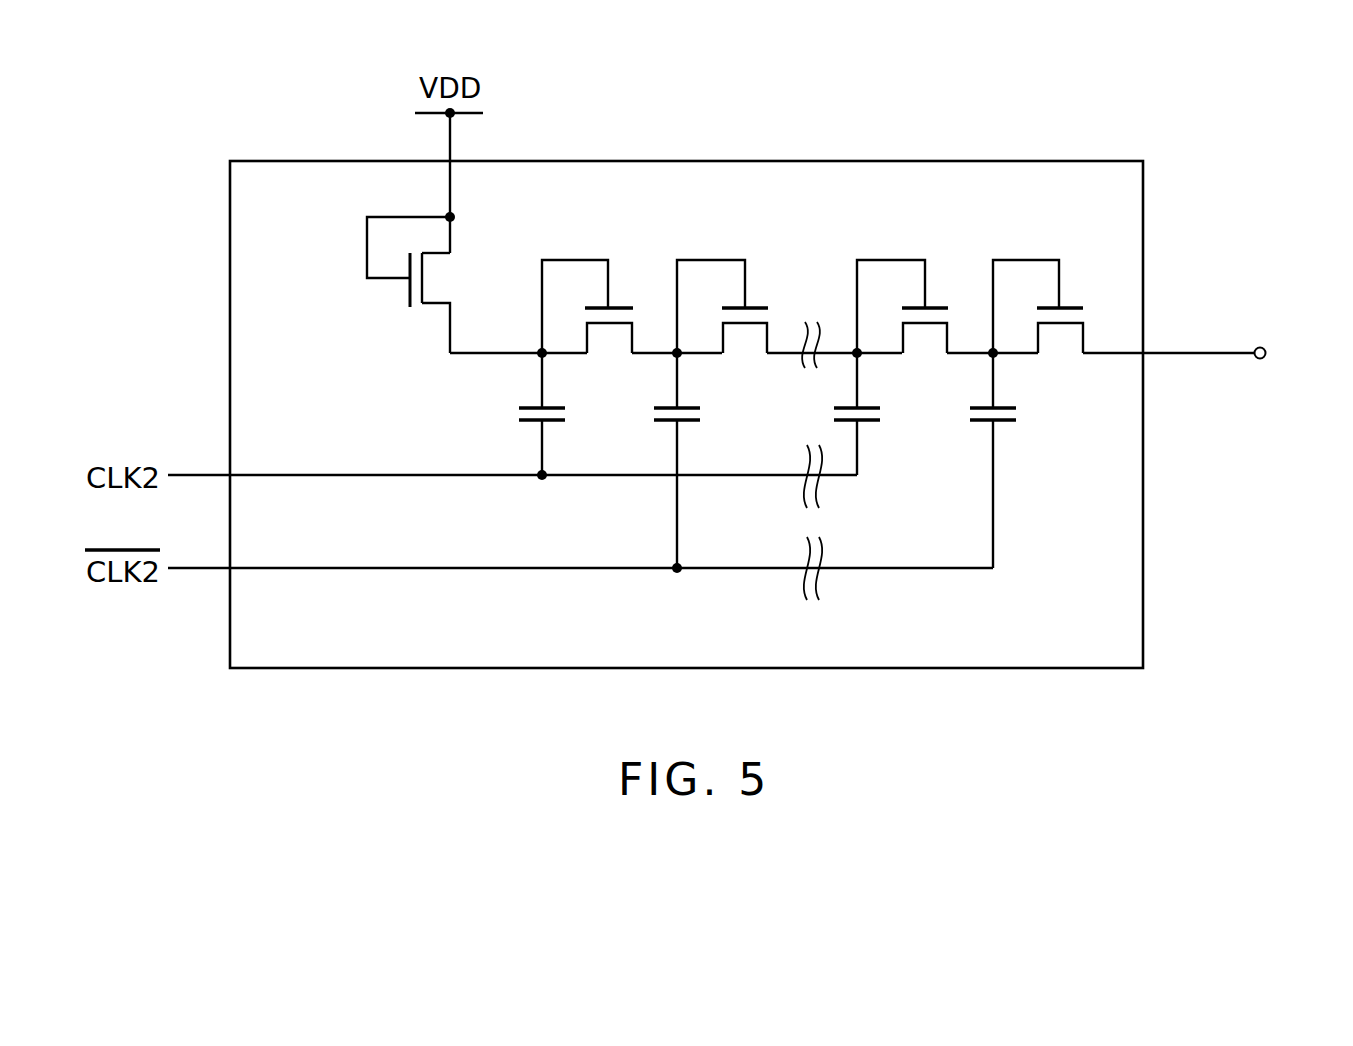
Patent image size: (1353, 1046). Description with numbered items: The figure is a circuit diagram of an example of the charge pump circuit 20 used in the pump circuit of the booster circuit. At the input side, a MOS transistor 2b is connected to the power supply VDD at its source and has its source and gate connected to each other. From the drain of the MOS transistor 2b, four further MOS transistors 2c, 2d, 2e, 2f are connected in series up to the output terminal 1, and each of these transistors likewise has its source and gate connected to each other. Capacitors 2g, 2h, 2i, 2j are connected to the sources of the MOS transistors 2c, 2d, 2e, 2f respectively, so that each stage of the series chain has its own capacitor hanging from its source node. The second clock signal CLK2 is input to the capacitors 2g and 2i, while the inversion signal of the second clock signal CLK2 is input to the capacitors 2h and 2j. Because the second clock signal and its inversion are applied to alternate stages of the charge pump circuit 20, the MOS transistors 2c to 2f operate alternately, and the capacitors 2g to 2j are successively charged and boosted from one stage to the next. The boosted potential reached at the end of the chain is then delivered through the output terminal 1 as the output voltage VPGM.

The charge pump circuit 20 is at (878, 161).
The MOS transistor 2b is at (418, 314).
The MOS transistor 2c is at (622, 305).
The MOS transistor 2d is at (757, 305).
The MOS transistor 2e is at (938, 305).
The MOS transistor 2f is at (1072, 305).
The capacitor 2g is at (530, 405).
The capacitor 2h is at (665, 405).
The capacitor 2i is at (845, 405).
The capacitor 2j is at (982, 405).
The output terminal 1 is at (1260, 360).